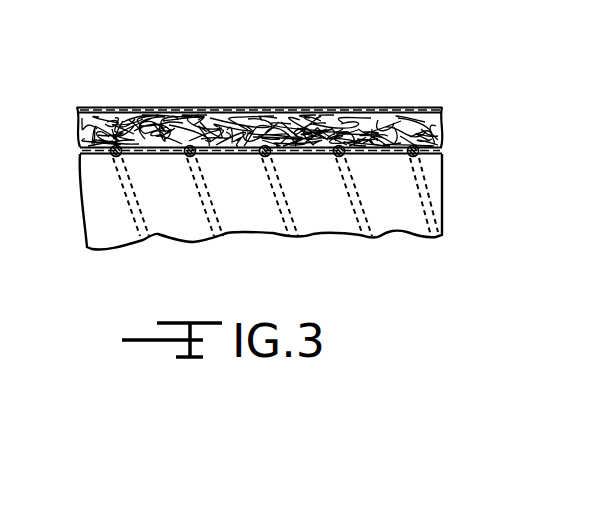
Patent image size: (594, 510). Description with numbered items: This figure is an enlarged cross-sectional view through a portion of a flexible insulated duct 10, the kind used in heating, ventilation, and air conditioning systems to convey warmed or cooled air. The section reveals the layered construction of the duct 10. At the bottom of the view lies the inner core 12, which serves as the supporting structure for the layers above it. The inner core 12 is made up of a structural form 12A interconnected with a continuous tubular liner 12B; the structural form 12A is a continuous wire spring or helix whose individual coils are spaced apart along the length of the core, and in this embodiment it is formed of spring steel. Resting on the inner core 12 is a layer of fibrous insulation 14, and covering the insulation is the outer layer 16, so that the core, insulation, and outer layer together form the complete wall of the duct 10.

The flexible insulated duct 10 is at (150, 85).
The inner core 12 is at (445, 192).
The structural form 12A is at (372, 238).
The continuous tubular liner 12B is at (412, 213).
The layer of fibrous insulation 14 is at (441, 132).
The outer layer 16 is at (343, 107).